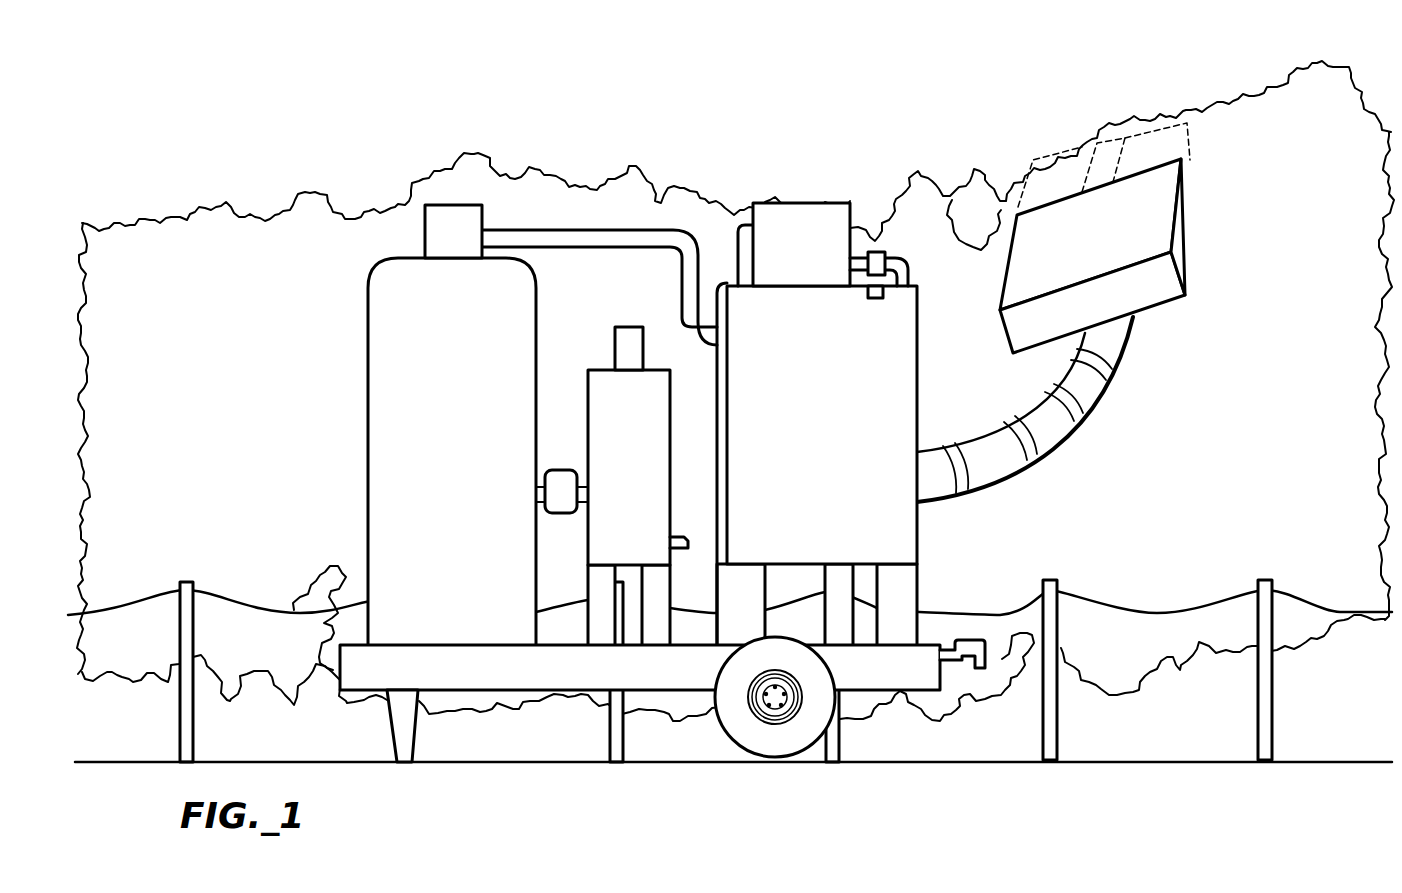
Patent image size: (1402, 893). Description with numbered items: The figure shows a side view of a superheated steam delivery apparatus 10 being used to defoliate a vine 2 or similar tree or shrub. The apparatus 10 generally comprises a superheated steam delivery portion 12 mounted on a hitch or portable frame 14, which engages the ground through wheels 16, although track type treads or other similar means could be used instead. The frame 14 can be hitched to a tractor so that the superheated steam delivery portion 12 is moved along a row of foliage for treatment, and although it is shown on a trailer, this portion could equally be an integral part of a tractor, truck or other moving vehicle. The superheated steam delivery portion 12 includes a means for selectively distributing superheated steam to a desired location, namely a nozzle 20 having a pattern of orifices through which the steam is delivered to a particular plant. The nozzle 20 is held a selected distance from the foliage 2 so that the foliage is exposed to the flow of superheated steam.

The vine 2 is at (1255, 419).
The superheated steam delivery apparatus 10 is at (793, 182).
The superheated steam delivery portion 12 is at (368, 380).
The portable frame 14 is at (540, 670).
The wheels 16 is at (780, 735).
The nozzle 20 is at (1182, 215).